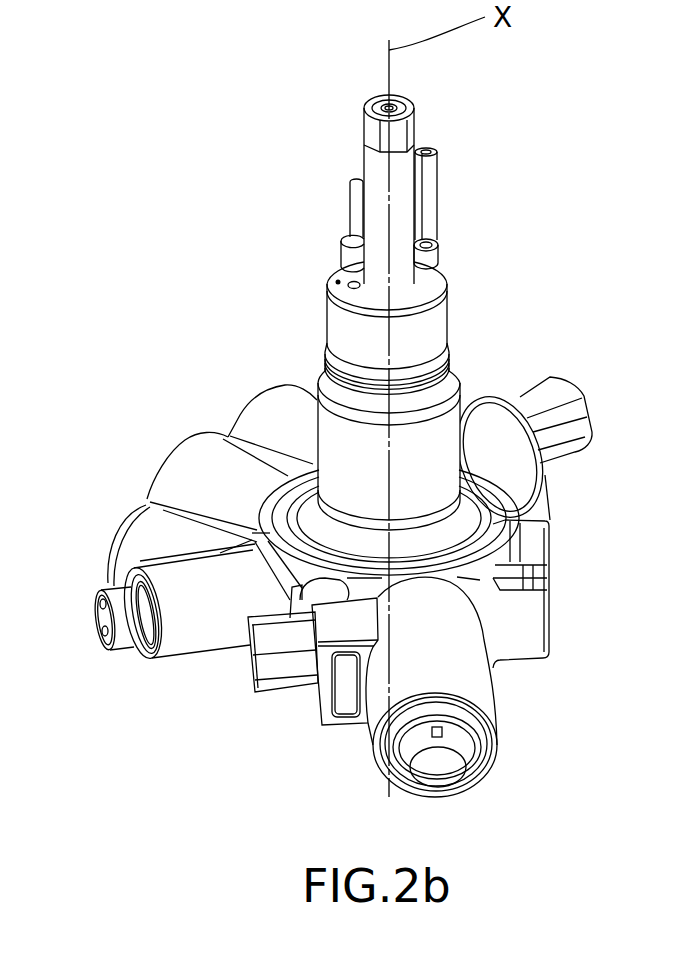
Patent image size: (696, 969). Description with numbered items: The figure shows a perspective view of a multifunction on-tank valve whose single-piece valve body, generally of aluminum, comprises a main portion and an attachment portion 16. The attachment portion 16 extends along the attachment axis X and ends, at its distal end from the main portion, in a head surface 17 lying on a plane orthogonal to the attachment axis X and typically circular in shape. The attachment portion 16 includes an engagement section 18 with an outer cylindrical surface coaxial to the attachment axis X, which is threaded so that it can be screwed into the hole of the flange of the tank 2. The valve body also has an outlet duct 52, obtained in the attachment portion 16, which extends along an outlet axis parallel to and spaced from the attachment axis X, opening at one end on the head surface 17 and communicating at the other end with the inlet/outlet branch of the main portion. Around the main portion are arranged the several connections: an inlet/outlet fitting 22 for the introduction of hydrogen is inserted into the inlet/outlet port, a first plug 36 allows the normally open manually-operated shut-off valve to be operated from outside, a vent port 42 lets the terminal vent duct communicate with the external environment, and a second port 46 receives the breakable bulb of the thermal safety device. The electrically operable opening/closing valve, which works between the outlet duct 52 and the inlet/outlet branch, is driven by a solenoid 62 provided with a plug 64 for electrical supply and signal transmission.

The tank 2 is at (260, 578).
The attachment portion 16 is at (485, 316).
The head surface 17 is at (336, 280).
The engagement section 18 is at (467, 436).
The inlet/outlet fitting 22 is at (598, 408).
The first plug 36 is at (258, 396).
The vent port 42 is at (102, 542).
The second port 46 is at (175, 672).
The outlet duct 52 is at (157, 460).
The solenoid 62 is at (503, 707).
The plug 64 is at (244, 680).